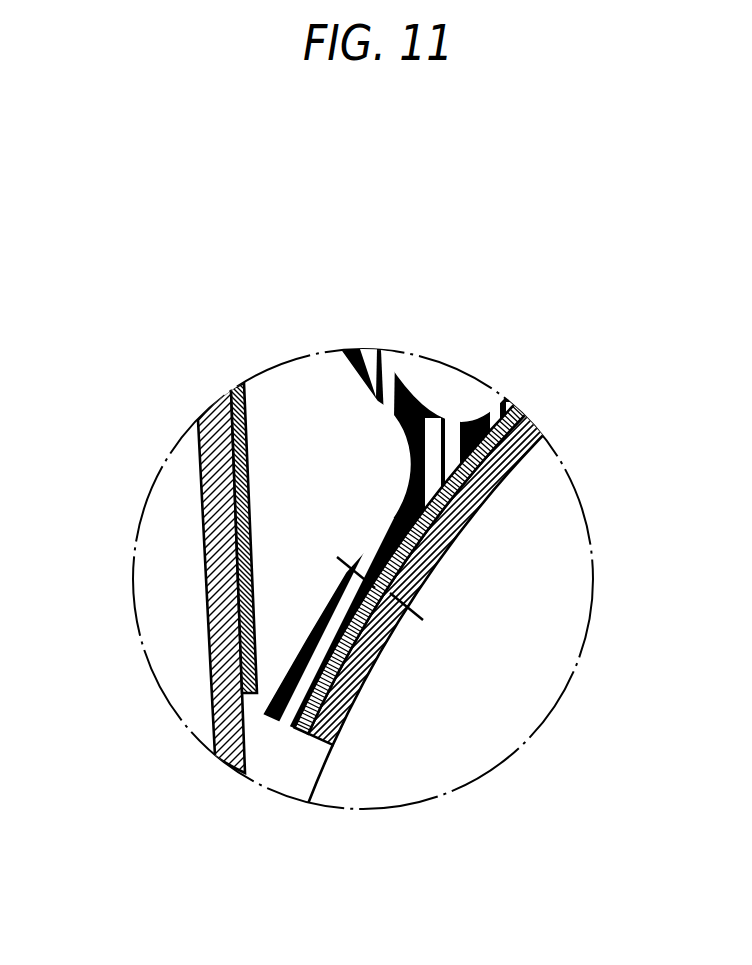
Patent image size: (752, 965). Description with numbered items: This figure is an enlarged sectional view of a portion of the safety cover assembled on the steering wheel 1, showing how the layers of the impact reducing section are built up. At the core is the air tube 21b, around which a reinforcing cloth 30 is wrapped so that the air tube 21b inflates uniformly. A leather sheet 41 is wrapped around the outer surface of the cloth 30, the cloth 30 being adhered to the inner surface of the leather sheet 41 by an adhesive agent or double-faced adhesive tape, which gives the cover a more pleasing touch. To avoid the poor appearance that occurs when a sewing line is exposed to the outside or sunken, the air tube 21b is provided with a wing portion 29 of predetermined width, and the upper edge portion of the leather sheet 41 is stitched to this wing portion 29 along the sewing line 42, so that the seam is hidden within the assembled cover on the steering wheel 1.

The steering wheel 1 is at (427, 762).
The air tube 21b is at (493, 402).
The wing portion 29 is at (305, 646).
The reinforcing cloth 30 is at (233, 388).
The leather sheet 41 is at (199, 445).
The sewing line 42 is at (420, 612).